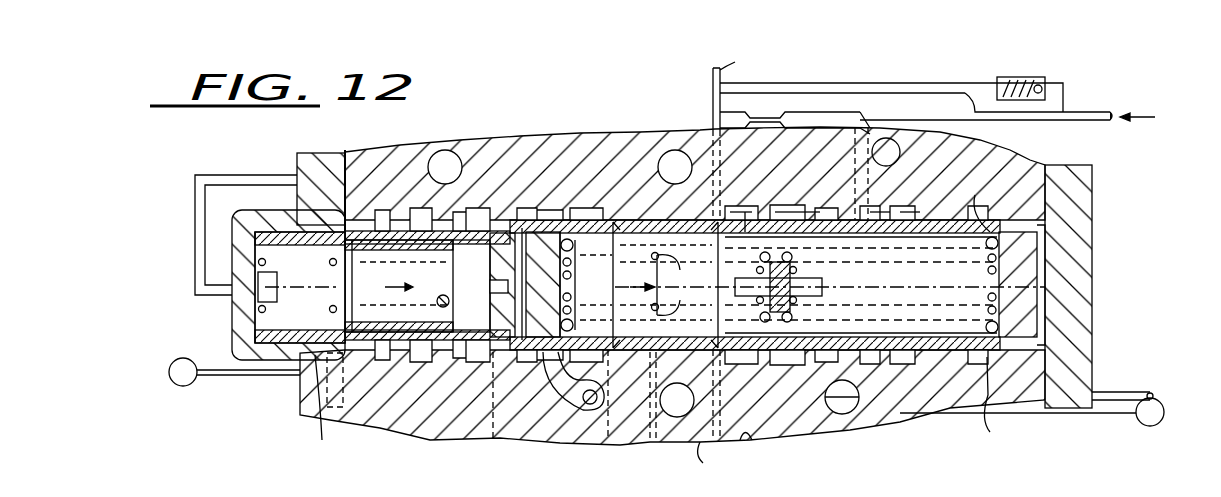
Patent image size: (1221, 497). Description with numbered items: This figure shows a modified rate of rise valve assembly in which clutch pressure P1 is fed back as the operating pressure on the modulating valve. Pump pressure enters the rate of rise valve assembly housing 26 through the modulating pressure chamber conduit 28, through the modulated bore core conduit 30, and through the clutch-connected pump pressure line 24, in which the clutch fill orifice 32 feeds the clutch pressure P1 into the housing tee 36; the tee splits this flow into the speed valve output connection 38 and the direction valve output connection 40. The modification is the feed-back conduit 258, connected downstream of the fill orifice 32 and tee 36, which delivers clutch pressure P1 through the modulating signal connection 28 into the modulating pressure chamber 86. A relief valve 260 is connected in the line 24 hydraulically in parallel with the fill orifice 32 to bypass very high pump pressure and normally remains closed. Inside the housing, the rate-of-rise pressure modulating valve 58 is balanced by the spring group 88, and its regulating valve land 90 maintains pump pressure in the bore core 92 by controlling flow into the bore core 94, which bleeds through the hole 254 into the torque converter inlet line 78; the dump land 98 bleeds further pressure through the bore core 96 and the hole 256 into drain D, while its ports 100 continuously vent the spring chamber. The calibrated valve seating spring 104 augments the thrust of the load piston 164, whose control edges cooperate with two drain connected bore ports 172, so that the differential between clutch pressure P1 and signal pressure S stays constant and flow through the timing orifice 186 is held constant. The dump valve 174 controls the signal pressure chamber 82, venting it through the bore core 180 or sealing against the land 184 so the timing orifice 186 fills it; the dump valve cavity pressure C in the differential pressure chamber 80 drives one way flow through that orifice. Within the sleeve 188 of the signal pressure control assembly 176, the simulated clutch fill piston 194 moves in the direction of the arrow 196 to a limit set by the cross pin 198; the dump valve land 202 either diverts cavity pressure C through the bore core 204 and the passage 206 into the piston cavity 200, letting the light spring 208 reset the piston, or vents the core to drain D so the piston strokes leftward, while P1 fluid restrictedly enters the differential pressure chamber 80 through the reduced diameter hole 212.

The pump pressure line 24 is at (1096, 125).
The rate of rise valve assembly housing 26 is at (245, 338).
The modulating pressure chamber conduit 28 is at (986, 126).
The modulated bore core conduit 30 is at (858, 130).
The clutch fill orifice 32 is at (776, 115).
The housing tee 36 is at (713, 94).
The speed valve output connection 38 is at (750, 441).
The direction valve output connection 40 is at (713, 72).
The rate-of-rise pressure modulating valve 58 is at (1040, 238).
The torque converter inlet line 78 is at (1112, 390).
The differential pressure chamber 80 is at (470, 258).
The signal pressure chamber 82 is at (560, 382).
The modulating pressure chamber 86 is at (1045, 340).
The spring group 88 is at (1000, 258).
The regulating valve land 90 is at (802, 212).
The bore core 92 is at (877, 212).
The bore core 94 is at (766, 212).
The bore core 96 is at (737, 212).
The dump land 98 is at (745, 212).
The ports 100 is at (748, 338).
The valve seating spring 104 is at (913, 212).
The load piston 164 is at (570, 244).
The drain connected bore ports 172 is at (829, 285).
The dump valve 174 is at (492, 258).
The signal pressure control assembly 176 is at (498, 355).
The bore core 180 is at (470, 355).
The land 184 is at (510, 262).
The timing orifice 186 is at (546, 262).
The sleeve 188 is at (345, 236).
The simulated clutch fill piston 194 is at (368, 318).
The arrow 196 is at (362, 268).
The cross pin 198 is at (437, 299).
The piston cavity 200 is at (256, 278).
The dump valve land 202 is at (430, 212).
The bore core 204 is at (400, 212).
The passage 206 is at (240, 174).
The light spring 208 is at (331, 305).
The reduced diameter hole 212 is at (346, 392).
The hole 254 is at (820, 352).
The hole 256 is at (735, 352).
The feed-back conduit 258 is at (845, 83).
The relief valve 260 is at (1005, 80).
The drain D is at (666, 392).
The signal pressure S is at (508, 362).
The dump valve cavity pressure C is at (437, 355).
The clutch pressure P1 is at (857, 258).